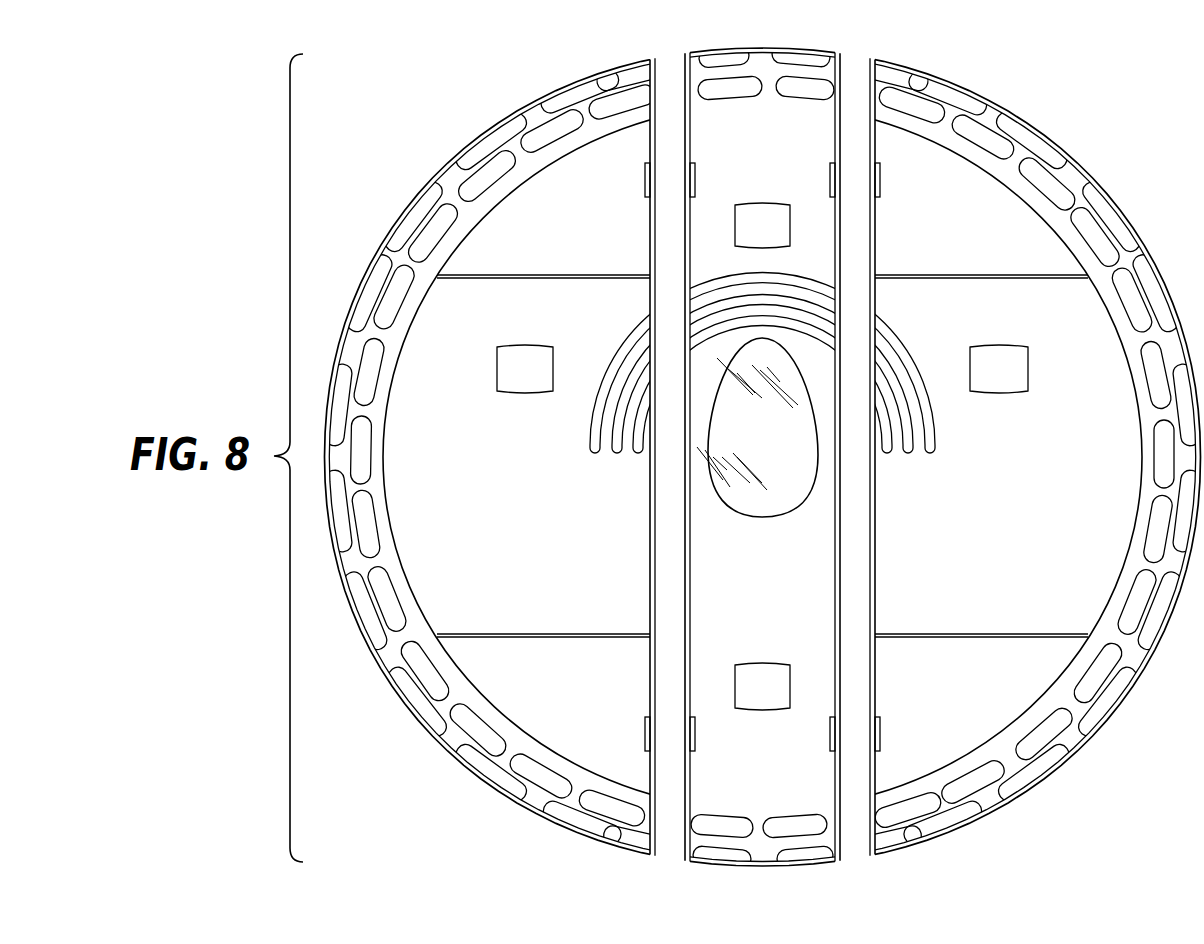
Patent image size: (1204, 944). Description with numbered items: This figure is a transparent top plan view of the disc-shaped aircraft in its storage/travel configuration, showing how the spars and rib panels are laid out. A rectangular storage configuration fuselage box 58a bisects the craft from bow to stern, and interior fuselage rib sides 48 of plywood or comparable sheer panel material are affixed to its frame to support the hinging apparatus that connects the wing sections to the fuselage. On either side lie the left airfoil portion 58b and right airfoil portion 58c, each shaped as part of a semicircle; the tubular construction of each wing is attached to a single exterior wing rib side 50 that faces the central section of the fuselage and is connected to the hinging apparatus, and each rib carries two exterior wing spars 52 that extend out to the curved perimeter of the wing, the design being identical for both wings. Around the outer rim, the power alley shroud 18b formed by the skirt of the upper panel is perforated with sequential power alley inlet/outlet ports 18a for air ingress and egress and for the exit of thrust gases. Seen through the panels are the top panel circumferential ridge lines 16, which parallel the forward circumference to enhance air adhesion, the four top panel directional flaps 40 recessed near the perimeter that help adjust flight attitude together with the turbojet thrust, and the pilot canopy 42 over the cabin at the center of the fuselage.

The top panel circumferential ridge lines 16 is at (786, 276).
The power alley inlet/outlet ports 18a is at (467, 188).
The power alley shroud 18b is at (386, 656).
The top panel directional flaps 40 is at (520, 347).
The pilot canopy 42 is at (770, 513).
The interior fuselage rib sides 48 is at (691, 124).
The exterior wing rib sides 50 is at (648, 142).
The exterior wing spars 52 is at (535, 276).
The storage configuration fuselage box 58a is at (768, 48).
The left airfoil portion 58b is at (527, 104).
The right airfoil portion 58c is at (997, 103).